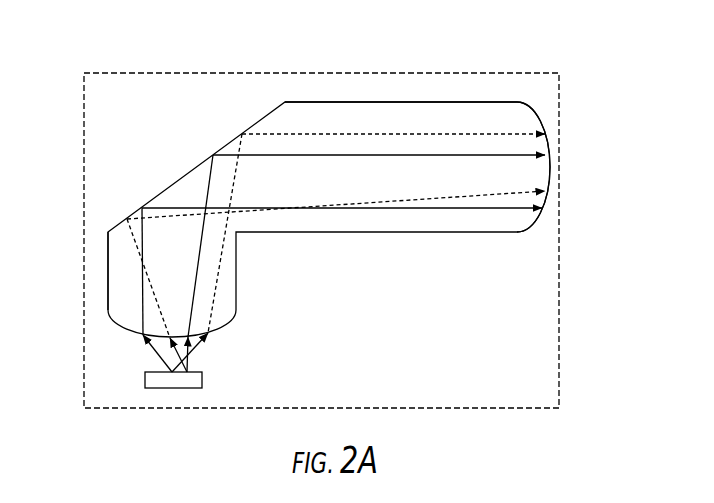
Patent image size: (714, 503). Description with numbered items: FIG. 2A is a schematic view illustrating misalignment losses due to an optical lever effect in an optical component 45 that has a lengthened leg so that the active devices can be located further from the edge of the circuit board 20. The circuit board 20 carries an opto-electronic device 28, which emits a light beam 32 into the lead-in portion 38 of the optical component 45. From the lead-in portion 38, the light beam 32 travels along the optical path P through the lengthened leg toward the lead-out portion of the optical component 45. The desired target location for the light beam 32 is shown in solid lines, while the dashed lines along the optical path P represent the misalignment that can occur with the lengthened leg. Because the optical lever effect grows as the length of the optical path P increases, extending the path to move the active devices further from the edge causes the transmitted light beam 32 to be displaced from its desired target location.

The circuit board 20 is at (560, 333).
The opto-electronic device 28 is at (180, 388).
The light beam 32 is at (476, 209).
The lead-in portion 38 is at (117, 281).
The optical component 45 is at (556, 174).
The optical path P is at (461, 96).